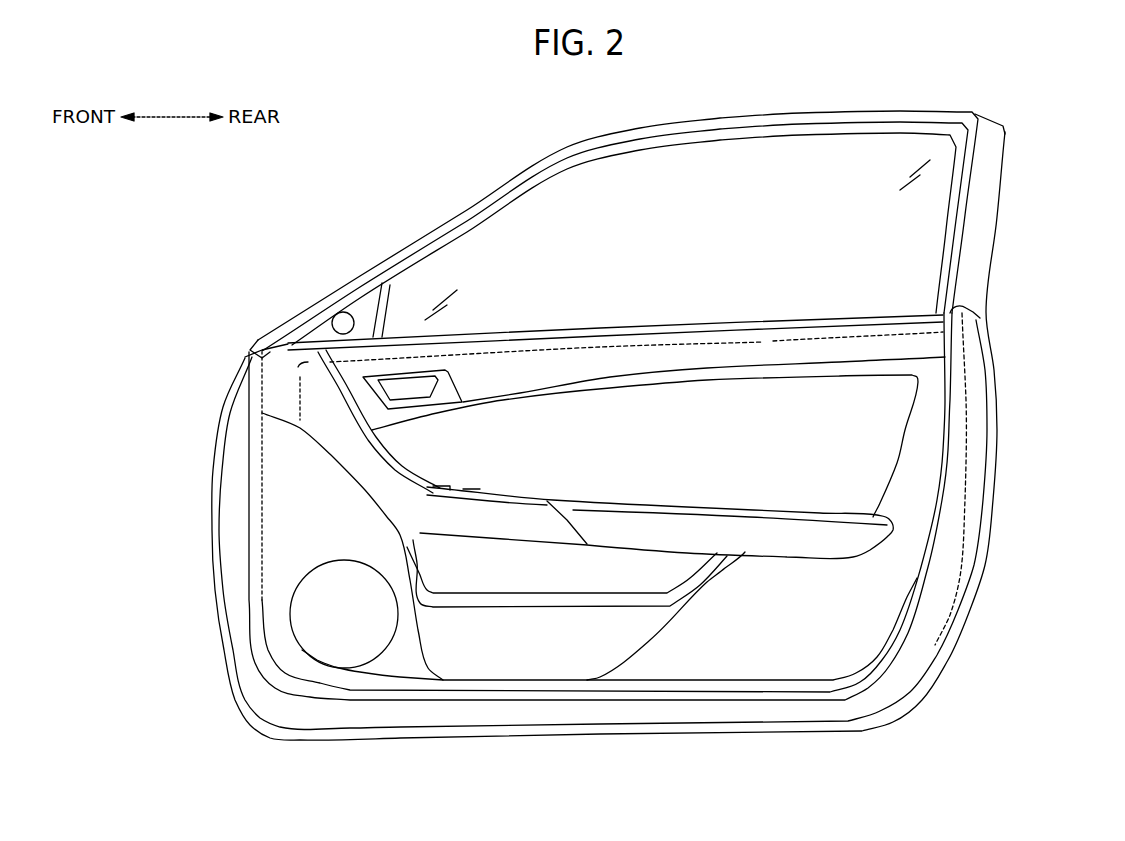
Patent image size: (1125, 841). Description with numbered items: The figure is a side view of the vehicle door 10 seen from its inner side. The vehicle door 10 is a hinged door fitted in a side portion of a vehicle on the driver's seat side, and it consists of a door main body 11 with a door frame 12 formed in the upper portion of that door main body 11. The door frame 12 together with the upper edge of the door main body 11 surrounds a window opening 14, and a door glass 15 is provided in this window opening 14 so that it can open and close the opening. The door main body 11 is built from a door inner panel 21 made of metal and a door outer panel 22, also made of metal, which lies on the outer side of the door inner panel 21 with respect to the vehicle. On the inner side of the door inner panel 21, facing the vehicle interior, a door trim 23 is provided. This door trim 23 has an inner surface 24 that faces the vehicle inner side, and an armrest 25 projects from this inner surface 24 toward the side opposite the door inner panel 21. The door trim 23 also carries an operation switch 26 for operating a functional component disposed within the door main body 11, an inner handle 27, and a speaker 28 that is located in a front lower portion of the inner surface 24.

The vehicle door 10 is at (224, 282).
The door main body 11 is at (1083, 437).
The door frame 12 is at (569, 147).
The window opening 14 is at (942, 262).
The door glass 15 is at (773, 200).
The door inner panel 21 is at (967, 540).
The door outer panel 22 is at (997, 447).
The door trim 23 is at (885, 622).
The inner surface 24 is at (827, 633).
The armrest 25 is at (747, 552).
The operation switch 26 is at (478, 487).
The inner handle 27 is at (415, 385).
The speaker 28 is at (375, 664).